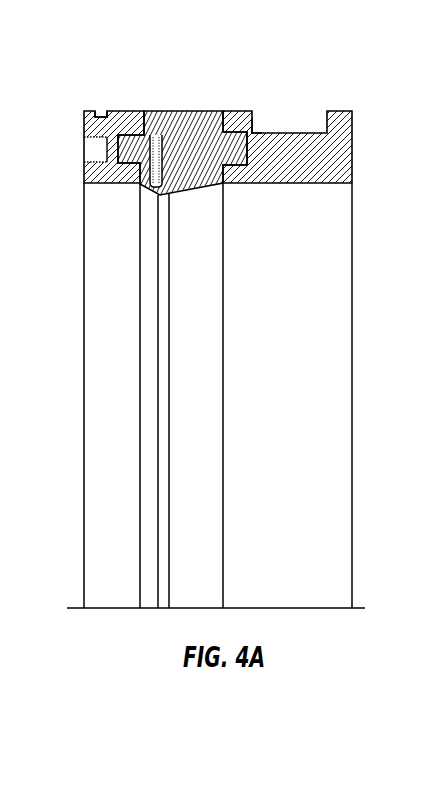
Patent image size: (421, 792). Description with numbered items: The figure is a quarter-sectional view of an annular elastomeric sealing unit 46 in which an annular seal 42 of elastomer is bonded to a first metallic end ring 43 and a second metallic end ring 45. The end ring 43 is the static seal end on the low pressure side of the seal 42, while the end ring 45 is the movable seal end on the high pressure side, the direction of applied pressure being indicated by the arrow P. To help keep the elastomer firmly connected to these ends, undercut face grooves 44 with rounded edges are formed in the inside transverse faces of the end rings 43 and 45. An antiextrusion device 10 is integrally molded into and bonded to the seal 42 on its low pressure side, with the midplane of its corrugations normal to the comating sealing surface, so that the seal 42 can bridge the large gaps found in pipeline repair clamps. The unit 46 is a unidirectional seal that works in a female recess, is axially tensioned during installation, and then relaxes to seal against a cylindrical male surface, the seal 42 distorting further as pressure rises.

The antiextrusion device 10 is at (152, 135).
The annular seal 42 is at (205, 110).
The first metallic end ring 43 is at (85, 126).
The undercut face grooves 44 is at (107, 118).
The second metallic end ring 45 is at (251, 111).
The annular elastomeric sealing unit 46 is at (230, 83).
The pressure direction P is at (322, 398).